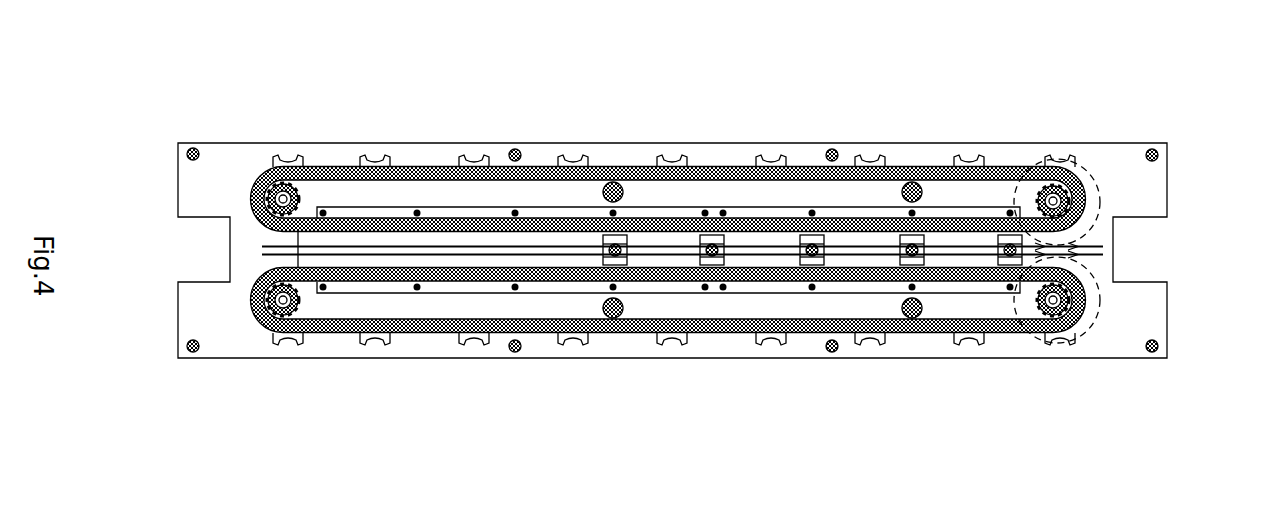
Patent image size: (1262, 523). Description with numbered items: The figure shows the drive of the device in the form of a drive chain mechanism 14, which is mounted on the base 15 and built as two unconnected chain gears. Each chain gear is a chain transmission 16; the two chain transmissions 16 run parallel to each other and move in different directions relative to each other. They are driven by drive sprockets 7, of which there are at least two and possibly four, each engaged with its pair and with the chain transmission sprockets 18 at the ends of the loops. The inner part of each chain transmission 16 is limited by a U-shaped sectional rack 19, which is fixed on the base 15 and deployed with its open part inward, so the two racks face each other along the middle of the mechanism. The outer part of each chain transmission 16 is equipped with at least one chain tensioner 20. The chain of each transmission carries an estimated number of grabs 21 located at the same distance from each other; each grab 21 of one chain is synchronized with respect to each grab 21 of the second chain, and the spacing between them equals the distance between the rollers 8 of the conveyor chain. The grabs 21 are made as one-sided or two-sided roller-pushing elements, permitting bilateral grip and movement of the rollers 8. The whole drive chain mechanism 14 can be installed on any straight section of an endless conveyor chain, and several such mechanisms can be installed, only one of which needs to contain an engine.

The drive sprocket 7 is at (1097, 292).
The roller 8 is at (617, 250).
The drive chain mechanism 14 is at (425, 157).
The base 15 is at (1132, 170).
The chain transmission 16 is at (903, 168).
The chain transmission sprocket 18 is at (282, 330).
The U-shaped sectional rack 19 is at (347, 238).
The chain tensioner 20 is at (901, 312).
The grab 21 is at (980, 338).